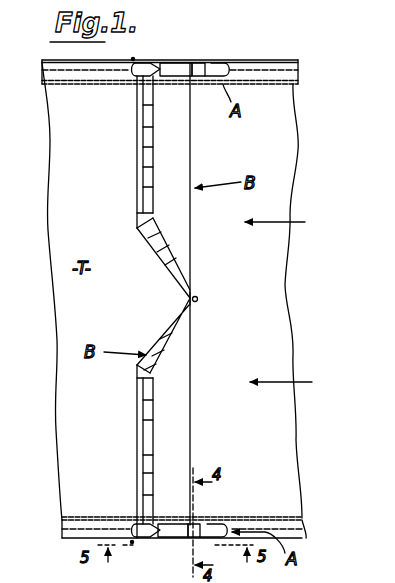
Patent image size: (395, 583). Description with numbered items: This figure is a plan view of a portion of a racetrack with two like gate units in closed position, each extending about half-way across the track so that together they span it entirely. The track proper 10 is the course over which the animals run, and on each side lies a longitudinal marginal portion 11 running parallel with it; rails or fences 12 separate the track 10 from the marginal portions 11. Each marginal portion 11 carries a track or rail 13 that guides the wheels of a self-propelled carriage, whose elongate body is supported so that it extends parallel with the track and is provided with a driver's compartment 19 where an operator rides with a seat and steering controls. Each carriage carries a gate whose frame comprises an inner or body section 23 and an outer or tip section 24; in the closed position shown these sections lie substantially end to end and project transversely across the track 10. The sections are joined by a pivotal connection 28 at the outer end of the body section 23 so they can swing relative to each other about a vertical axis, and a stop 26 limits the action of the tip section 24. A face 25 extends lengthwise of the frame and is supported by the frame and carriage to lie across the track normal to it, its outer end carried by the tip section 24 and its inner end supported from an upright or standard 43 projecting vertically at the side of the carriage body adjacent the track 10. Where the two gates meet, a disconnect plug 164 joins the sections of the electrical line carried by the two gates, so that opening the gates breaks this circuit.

The track proper 10 is at (177, 291).
The longitudinal marginal portion 11 is at (288, 74).
The rail or fence 12 is at (268, 86).
The track or rail 13 is at (285, 60).
The driver's compartment 19 is at (203, 527).
The upright or standard 43 is at (192, 85).
The inner or body section 23 is at (141, 146).
The outer or tip section 24 is at (173, 277).
The face 25 is at (193, 157).
The stop 26 is at (135, 108).
The pivotal connection 28 is at (150, 217).
The disconnect plug 164 is at (198, 299).